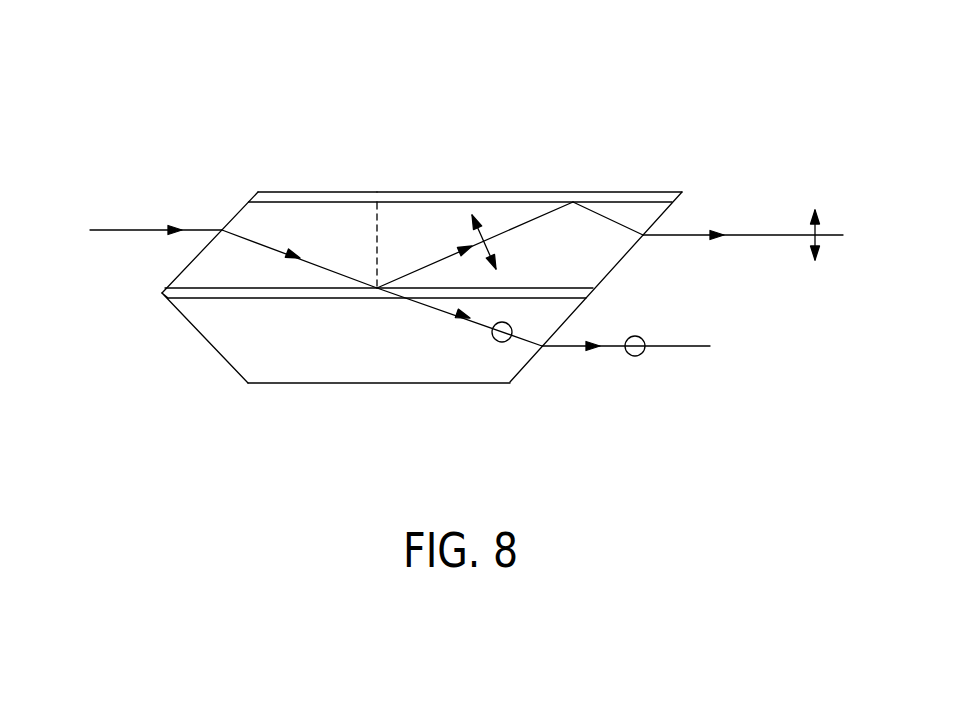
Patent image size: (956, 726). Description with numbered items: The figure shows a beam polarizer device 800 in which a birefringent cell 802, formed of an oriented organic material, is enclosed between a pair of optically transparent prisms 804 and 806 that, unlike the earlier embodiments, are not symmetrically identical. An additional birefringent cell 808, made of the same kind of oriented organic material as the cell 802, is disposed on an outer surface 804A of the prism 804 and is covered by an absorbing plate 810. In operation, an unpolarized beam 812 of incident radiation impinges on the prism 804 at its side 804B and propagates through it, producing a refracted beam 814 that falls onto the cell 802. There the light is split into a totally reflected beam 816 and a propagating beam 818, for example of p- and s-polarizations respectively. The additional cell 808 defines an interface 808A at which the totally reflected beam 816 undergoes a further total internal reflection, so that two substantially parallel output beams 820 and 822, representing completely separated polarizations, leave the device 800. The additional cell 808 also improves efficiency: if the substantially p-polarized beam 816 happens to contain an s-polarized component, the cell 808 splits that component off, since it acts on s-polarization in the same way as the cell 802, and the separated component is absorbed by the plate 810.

The beam polarizer device 800 is at (467, 92).
The birefringent cell 802 is at (204, 302).
The prism 804 is at (303, 217).
The outer surface of the prism 804A is at (413, 205).
The side of the prism 804B is at (240, 212).
The prism 806 is at (330, 365).
The additional birefringent cell 808 is at (694, 178).
The interface 808A is at (605, 202).
The absorbing plate 810 is at (605, 192).
The unpolarized beam 812 is at (125, 230).
The refracted beam 814 is at (244, 238).
The totally reflected beam 816 is at (519, 222).
The propagating beam 818 is at (434, 306).
The output beam 820 is at (737, 233).
The output beam 822 is at (683, 346).